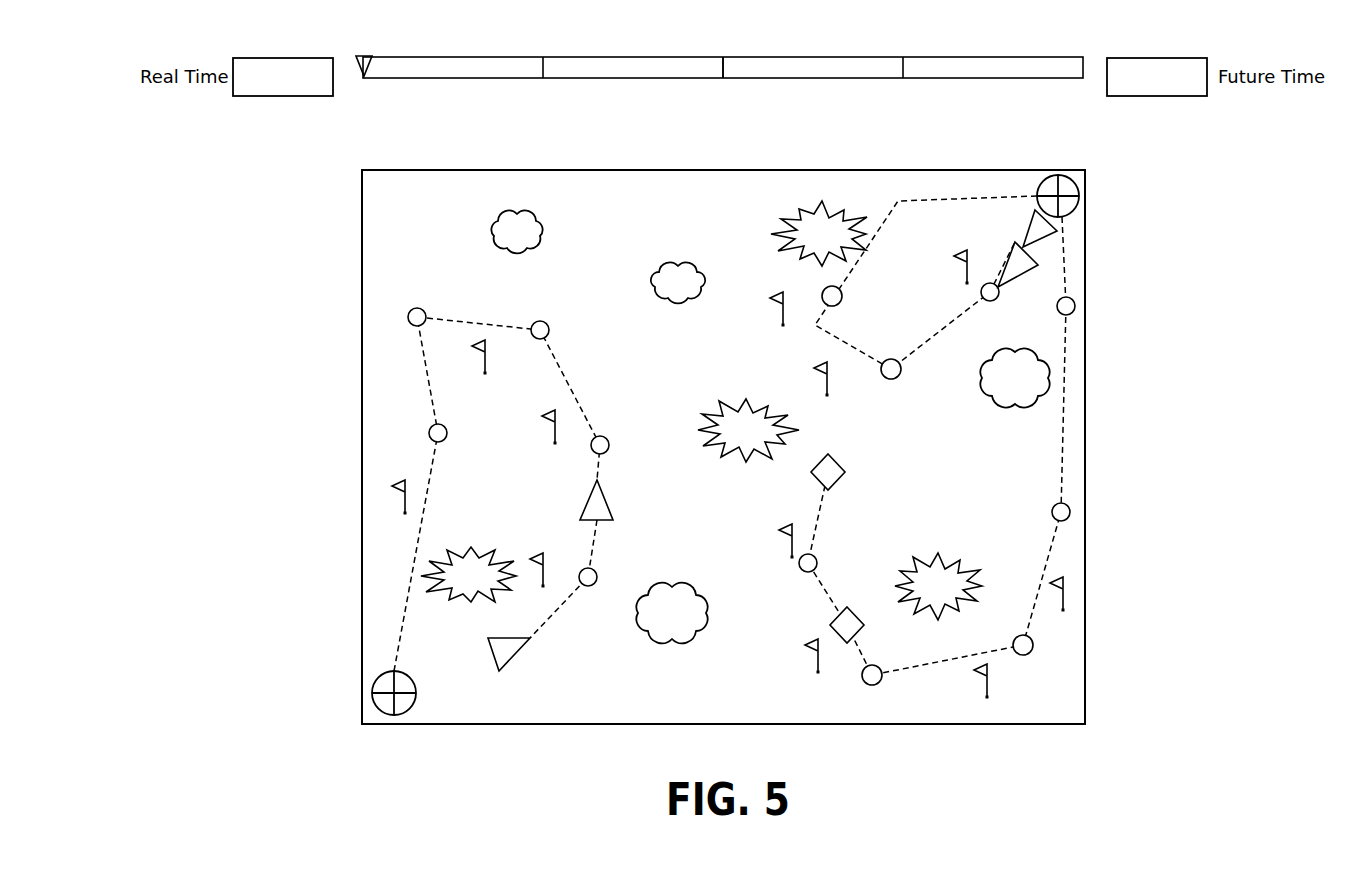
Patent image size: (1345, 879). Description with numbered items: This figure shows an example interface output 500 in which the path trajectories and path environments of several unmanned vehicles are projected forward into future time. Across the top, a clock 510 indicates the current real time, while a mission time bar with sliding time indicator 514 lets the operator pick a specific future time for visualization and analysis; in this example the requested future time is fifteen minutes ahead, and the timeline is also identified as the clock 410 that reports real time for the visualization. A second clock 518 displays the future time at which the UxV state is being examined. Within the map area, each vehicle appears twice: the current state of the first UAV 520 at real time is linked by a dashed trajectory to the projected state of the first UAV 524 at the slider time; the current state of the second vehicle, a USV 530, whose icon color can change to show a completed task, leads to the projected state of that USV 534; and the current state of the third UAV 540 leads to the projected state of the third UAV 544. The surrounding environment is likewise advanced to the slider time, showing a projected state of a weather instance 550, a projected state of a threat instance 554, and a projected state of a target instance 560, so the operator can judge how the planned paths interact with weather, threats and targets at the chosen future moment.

The clock 410 is at (473, 29).
The interface output 500 is at (1128, 257).
The clock 510 is at (284, 57).
The mission time bar with sliding time indicator 514 is at (723, 57).
The clock 518 is at (1156, 57).
The current state of UAV 1 520 is at (488, 653).
The projected state of UAV 1 524 is at (588, 500).
The current state of USV 2 530 is at (1025, 233).
The projected state of USV 2 534 is at (1020, 270).
The current state of UAV 3 540 is at (840, 458).
The projected state of UAV 3 544 is at (835, 614).
The projected state of Wx instance 550 is at (494, 236).
The projected state of threat instance 554 is at (795, 221).
The projected state of target instance 560 is at (960, 262).